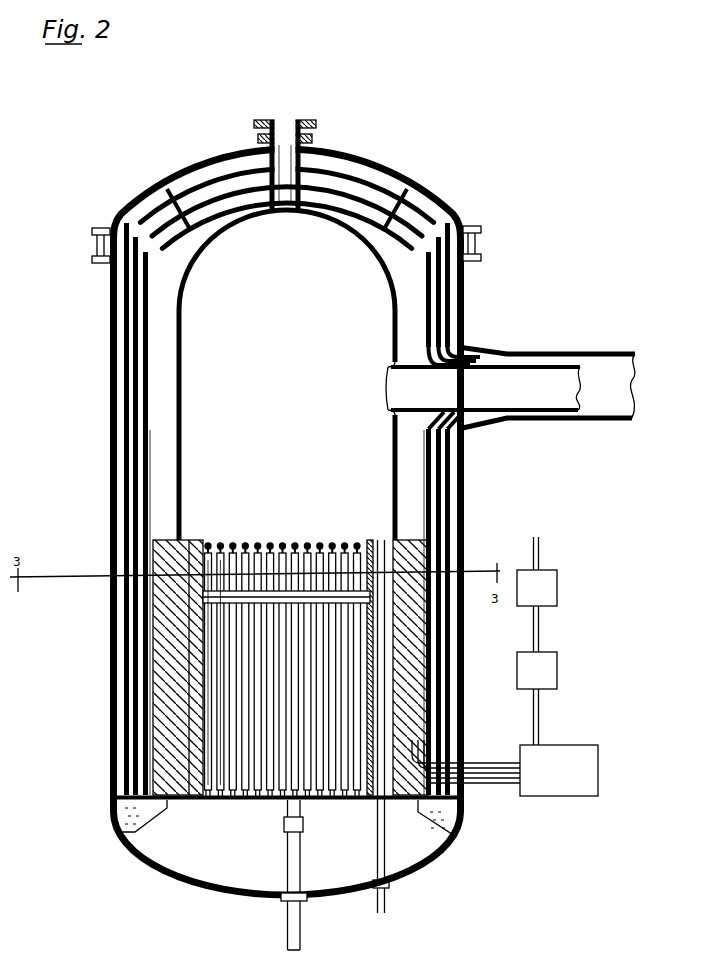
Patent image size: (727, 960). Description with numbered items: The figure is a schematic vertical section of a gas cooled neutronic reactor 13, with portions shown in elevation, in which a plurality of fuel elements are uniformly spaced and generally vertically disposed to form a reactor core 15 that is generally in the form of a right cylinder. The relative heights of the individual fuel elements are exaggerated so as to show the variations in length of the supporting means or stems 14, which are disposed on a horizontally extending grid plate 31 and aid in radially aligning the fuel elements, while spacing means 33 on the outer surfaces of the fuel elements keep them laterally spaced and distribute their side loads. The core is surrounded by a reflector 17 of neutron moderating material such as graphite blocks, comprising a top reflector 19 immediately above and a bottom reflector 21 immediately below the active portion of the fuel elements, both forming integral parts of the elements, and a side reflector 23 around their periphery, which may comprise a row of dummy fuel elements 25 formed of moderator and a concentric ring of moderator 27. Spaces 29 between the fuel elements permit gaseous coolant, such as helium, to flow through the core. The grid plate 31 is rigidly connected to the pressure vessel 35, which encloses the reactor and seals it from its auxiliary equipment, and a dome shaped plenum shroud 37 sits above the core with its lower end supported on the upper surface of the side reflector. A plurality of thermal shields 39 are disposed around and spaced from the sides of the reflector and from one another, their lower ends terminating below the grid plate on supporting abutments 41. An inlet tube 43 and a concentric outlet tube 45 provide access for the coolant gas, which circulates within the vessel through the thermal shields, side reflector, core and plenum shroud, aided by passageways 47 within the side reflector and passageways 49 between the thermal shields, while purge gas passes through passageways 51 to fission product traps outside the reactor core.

The gas cooled neutronic reactor 13 is at (310, 446).
The stems 14 is at (193, 805).
The reactor core 15 is at (211, 672).
The reflector 17 is at (200, 556).
The top reflector 19 is at (247, 542).
The bottom reflector 21 is at (246, 797).
The side reflector 23 is at (167, 667).
The dummy fuel elements 25 is at (157, 733).
The concentric ring of moderator 27 is at (160, 714).
The spaces 29 is at (217, 631).
The grid plate 31 is at (263, 798).
The spacing means 33 is at (203, 600).
The pressure vessel 35 is at (110, 337).
The plenum shroud 37 is at (182, 390).
The thermal shields 39 is at (132, 378).
The supporting abutments 41 is at (122, 830).
The inlet tube 43 is at (507, 352).
The outlet tube 45 is at (544, 412).
The passageways 47 is at (155, 690).
The passageways 49 is at (445, 478).
The passageways 51 is at (488, 762).